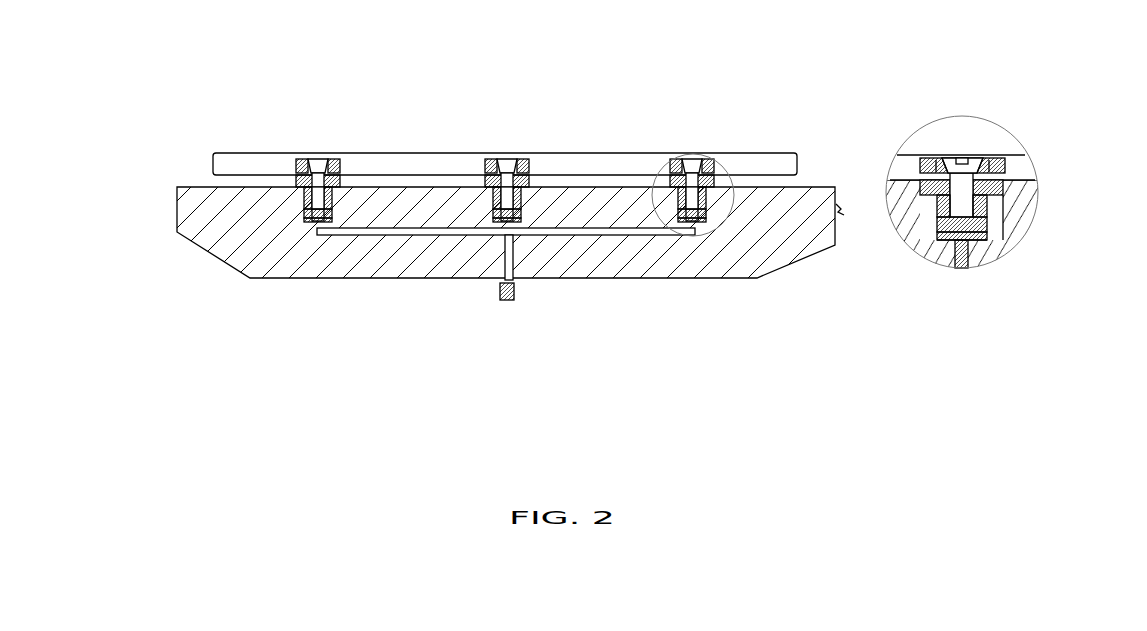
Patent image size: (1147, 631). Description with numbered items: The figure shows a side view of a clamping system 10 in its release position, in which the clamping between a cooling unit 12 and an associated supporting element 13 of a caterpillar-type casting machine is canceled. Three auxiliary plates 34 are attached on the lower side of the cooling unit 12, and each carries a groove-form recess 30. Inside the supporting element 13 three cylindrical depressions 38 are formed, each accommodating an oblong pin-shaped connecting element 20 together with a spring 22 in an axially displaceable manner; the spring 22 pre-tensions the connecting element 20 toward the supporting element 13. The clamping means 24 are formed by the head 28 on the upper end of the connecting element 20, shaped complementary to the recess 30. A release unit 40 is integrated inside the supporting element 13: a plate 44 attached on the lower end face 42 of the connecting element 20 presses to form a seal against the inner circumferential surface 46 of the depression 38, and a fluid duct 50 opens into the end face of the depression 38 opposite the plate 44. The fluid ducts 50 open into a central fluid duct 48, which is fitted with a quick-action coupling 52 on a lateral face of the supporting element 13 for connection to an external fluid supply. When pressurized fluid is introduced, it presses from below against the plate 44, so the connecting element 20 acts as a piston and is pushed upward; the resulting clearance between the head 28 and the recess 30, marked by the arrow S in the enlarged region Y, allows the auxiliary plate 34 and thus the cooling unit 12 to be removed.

The clamping system 10 is at (1030, 273).
The cooling unit 12 is at (250, 162).
The supporting element 13 is at (188, 200).
The connecting element 20 is at (318, 190).
The spring 22 is at (932, 195).
The clamping means 24 is at (925, 38).
The head 28 is at (966, 160).
The recess 30 is at (950, 153).
The auxiliary plate 34 is at (342, 173).
The depression 38 is at (678, 196).
The release unit 40 is at (1002, 204).
The lower end face 42 is at (952, 240).
The plate 44 is at (988, 225).
The inner circumferential surface 46 is at (990, 230).
The central fluid duct 48 is at (504, 240).
The fluid duct 50 is at (392, 236).
The quick-action coupling 52 is at (506, 302).
The clearance S is at (940, 163).
The enlarged region Y is at (706, 156).